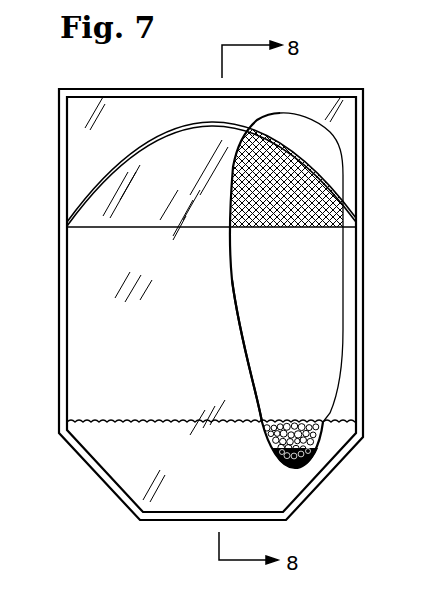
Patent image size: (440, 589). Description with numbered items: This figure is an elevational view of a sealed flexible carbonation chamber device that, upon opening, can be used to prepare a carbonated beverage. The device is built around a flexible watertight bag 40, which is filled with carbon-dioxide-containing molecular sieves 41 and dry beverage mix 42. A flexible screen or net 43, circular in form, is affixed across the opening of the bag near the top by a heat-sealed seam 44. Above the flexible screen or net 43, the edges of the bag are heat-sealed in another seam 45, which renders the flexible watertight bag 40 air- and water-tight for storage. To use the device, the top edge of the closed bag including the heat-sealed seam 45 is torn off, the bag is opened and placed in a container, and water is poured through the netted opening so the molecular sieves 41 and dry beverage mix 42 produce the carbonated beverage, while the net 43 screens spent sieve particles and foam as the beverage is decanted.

The flexible watertight bag 40 is at (85, 282).
The carbon dioxide containing molecular sieves 41 is at (300, 428).
The dry beverage mix 42 is at (300, 455).
The flexible screen or net 43 is at (320, 198).
The heat-sealed seam 44 is at (95, 190).
The heat-sealed seam 45 is at (137, 88).